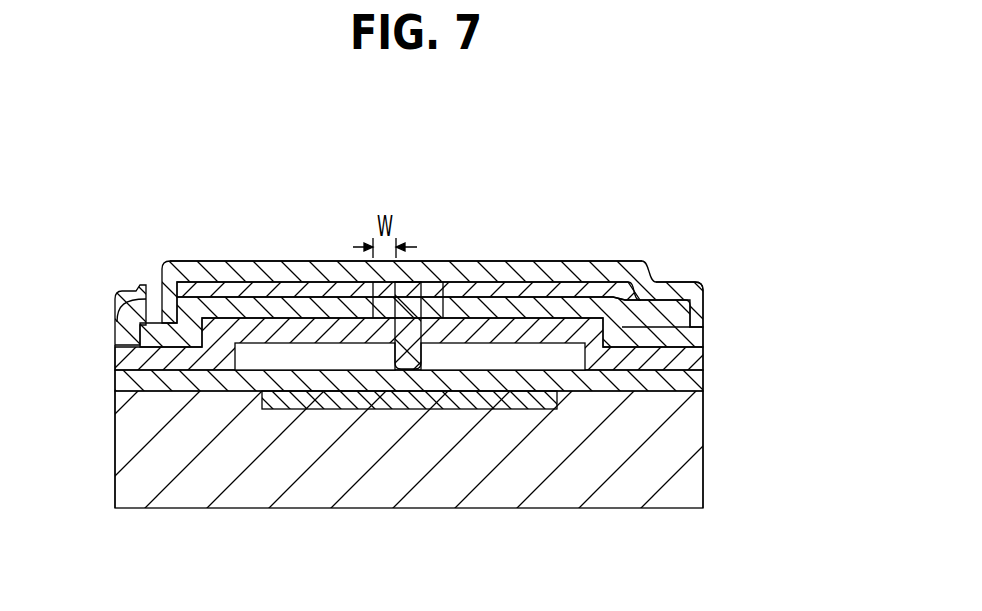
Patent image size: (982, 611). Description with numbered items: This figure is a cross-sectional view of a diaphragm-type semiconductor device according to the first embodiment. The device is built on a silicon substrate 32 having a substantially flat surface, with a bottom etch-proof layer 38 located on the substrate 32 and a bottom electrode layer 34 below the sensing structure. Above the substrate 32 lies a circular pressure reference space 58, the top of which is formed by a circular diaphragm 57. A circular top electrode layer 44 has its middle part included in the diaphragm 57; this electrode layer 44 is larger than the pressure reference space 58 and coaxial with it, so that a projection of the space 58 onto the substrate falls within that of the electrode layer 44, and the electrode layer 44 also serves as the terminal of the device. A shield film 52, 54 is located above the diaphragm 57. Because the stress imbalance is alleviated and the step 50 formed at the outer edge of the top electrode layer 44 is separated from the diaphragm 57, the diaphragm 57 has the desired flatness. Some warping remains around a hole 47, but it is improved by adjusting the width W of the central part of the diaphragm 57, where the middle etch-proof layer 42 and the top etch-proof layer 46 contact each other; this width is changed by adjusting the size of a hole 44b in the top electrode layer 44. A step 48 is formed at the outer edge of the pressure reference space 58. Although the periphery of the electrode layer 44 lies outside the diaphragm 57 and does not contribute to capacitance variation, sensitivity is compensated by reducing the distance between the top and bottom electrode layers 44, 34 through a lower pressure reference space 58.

The silicon substrate 32 is at (693, 485).
The bottom electrode layer 34 is at (545, 410).
The bottom etch-proof layer 38 is at (703, 383).
The middle etch-proof layer 42 is at (700, 360).
The top electrode layer 44 is at (515, 303).
The hole 44b is at (445, 292).
The top etch-proof layer 46 is at (700, 337).
The hole 47 is at (415, 320).
The step 48 is at (668, 252).
The step 50 is at (713, 272).
The shield film 52 is at (403, 305).
The shield film 54 is at (448, 300).
The circular diaphragm 57 is at (320, 259).
The pressure reference space 58 is at (280, 355).